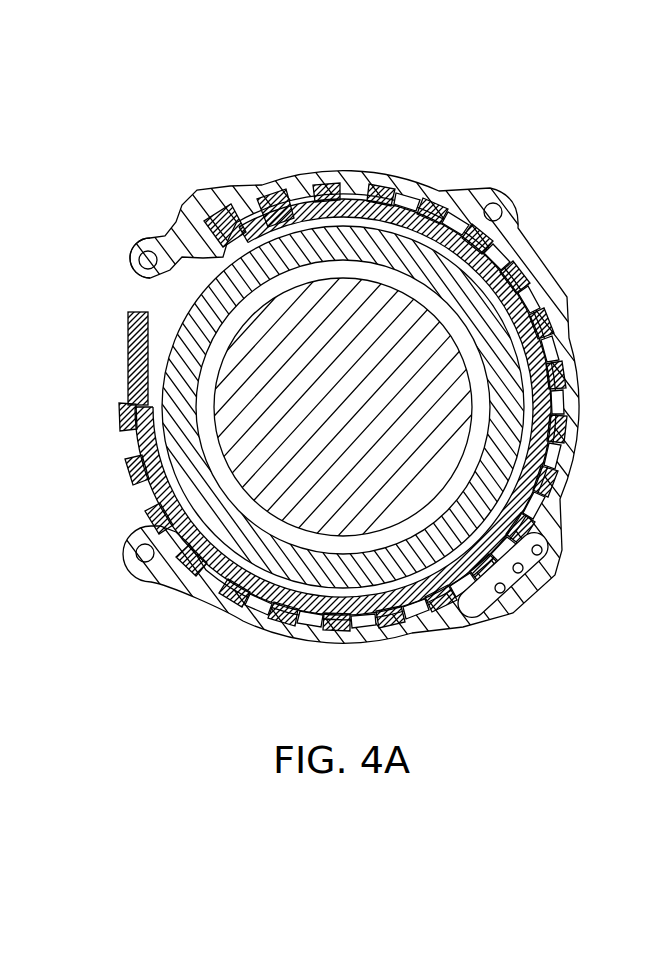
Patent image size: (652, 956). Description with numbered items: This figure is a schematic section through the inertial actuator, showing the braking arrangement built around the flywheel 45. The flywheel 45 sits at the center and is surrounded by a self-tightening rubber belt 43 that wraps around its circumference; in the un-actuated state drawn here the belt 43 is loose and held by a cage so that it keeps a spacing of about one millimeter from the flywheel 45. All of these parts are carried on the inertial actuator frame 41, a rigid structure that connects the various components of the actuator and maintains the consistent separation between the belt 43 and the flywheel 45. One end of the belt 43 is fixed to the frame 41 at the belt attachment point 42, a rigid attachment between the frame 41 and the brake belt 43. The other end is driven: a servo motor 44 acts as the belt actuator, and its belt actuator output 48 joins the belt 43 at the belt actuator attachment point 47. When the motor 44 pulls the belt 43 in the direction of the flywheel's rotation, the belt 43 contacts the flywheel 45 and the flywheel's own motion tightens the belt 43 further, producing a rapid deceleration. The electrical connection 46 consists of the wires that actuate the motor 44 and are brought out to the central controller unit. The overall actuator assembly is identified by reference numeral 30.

The motor 30 is at (335, 78).
The inertial actuator frame 41 is at (158, 572).
The belt attachment point 42 is at (218, 206).
The self-tightening rubber belt 43 is at (515, 282).
The servo motor 44 is at (300, 400).
The flywheel 45 is at (520, 466).
The electrical connection 46 is at (504, 611).
The belt actuator attachment point 47 is at (130, 379).
The belt actuator output 48 is at (138, 260).